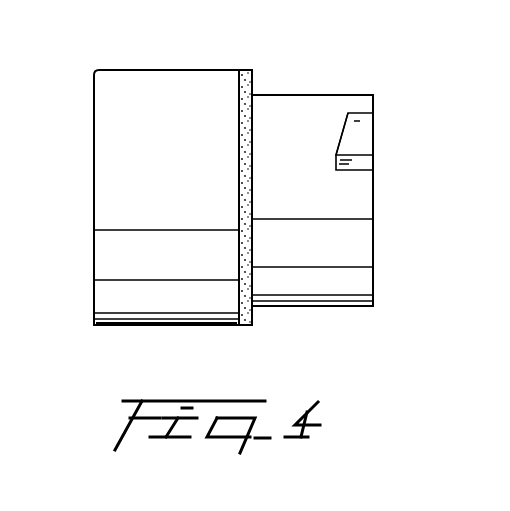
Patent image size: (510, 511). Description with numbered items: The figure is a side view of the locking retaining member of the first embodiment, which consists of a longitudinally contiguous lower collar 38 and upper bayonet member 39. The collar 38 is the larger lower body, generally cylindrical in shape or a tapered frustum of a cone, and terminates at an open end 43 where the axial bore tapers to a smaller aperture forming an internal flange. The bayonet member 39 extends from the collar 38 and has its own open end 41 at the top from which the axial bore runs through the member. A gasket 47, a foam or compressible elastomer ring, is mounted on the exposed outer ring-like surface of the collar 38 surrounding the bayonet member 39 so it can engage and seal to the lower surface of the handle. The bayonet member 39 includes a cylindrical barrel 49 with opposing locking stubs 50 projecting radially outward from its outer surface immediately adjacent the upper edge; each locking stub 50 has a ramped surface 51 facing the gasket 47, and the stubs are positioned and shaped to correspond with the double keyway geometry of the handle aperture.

The lower collar 38 is at (166, 92).
The upper bayonet member 39 is at (293, 97).
The open end 41 is at (375, 268).
The open end 43 is at (90, 225).
The gasket 47 is at (245, 73).
The cylindrical barrel 49 is at (333, 98).
The locking stub 50 is at (363, 140).
The ramped surface 51 is at (345, 128).